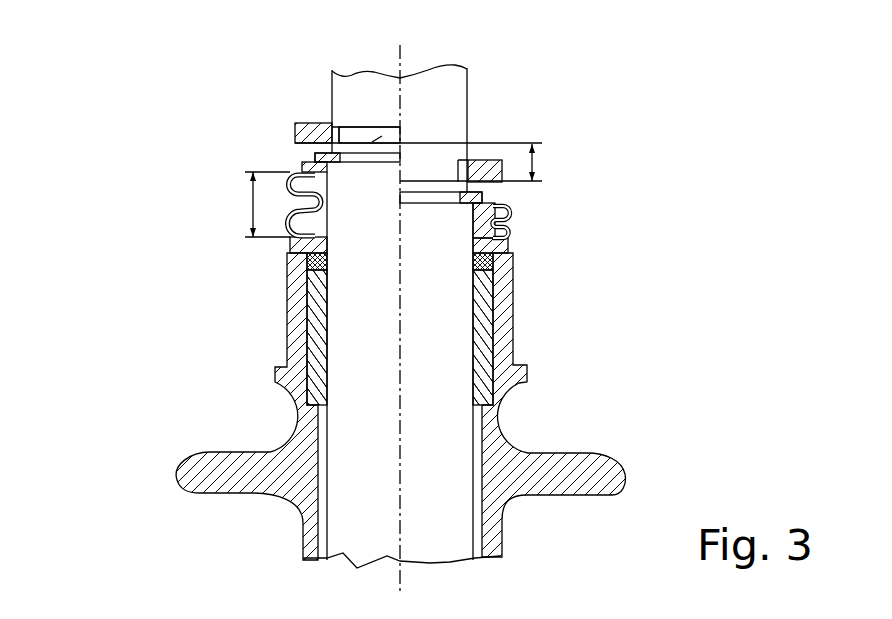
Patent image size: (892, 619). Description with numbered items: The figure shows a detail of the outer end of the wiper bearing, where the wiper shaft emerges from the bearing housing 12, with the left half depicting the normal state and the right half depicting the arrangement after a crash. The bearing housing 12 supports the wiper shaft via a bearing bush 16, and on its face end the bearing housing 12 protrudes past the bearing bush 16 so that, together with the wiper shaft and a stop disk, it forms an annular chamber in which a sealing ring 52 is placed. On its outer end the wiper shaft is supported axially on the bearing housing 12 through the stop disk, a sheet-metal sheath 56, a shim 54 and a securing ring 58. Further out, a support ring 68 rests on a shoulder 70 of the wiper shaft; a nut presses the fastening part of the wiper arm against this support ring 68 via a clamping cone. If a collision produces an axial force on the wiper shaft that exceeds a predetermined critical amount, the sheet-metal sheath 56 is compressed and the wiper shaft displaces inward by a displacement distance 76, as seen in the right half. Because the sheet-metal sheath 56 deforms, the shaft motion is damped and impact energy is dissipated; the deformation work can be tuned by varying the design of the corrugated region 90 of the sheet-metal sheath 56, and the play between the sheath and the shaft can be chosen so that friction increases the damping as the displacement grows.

The bearing housing 12 is at (280, 382).
The bearing bush 16 is at (480, 373).
The sealing ring 52 is at (492, 263).
The shim 54 is at (300, 167).
The sheet-metal sheath 56 is at (288, 227).
The securing ring 58 is at (316, 159).
The support ring 68 is at (298, 125).
The shoulder 70 is at (370, 142).
The displacement distance 76 is at (533, 162).
The corrugated region 90 is at (253, 192).